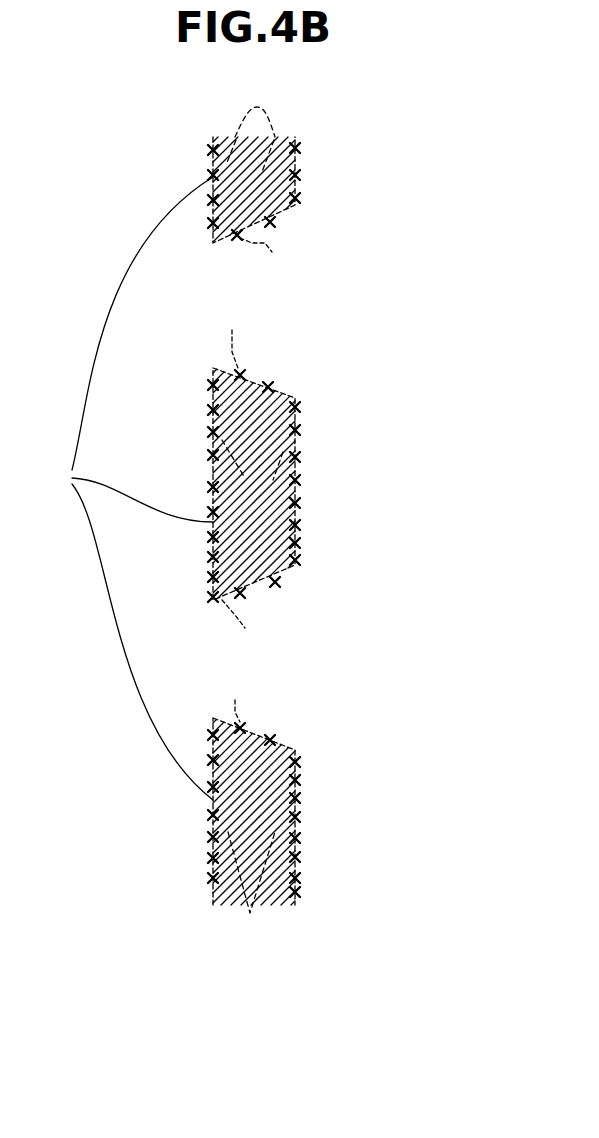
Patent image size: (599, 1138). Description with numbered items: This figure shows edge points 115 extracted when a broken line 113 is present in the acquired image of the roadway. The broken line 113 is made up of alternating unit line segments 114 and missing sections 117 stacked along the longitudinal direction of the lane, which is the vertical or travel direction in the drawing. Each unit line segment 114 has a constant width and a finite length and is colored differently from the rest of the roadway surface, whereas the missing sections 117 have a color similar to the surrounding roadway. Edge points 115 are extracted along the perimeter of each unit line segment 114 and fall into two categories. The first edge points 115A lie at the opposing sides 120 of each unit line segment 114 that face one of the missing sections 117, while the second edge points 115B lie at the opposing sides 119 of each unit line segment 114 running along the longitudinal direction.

The broken line 113 is at (88, 298).
The unit line segment 114 is at (116, 488).
The edge points 115 is at (418, 165).
The first edge points 115A is at (275, 222).
The second edge points 115B is at (213, 175).
The missing section 117 is at (200, 243).
The opposing sides along the longitudinal direction 119 is at (252, 511).
The opposing sides facing a missing section 120 is at (257, 480).